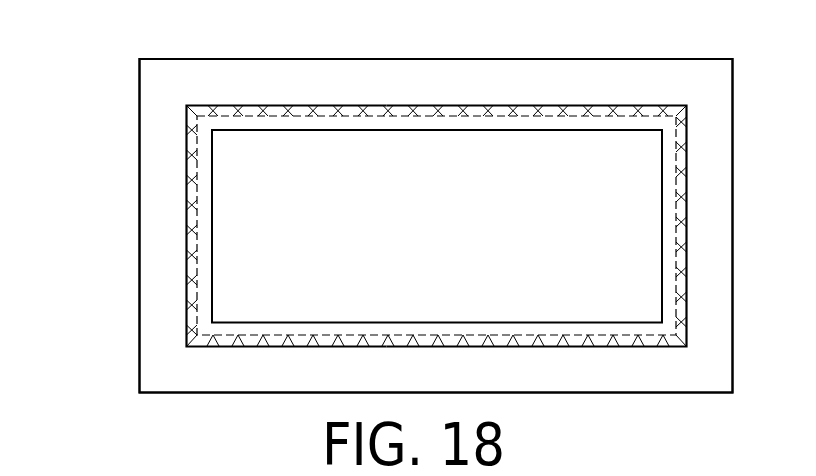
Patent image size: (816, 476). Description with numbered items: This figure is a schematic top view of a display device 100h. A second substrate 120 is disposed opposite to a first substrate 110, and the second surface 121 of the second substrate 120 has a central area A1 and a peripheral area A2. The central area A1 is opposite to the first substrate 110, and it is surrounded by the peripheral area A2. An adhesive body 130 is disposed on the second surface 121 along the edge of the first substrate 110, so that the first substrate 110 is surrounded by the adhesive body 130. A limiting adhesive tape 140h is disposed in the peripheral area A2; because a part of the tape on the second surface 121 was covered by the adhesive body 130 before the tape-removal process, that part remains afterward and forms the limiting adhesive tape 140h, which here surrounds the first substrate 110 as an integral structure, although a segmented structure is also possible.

The display device 100h is at (105, 22).
The first substrate 110 is at (443, 162).
The second substrate 120 is at (340, 59).
The second surface 121 is at (92, 137).
The central area A1 is at (237, 223).
The peripheral area A2 is at (155, 166).
The adhesive body 130 is at (203, 305).
The limiting adhesive tape 140h is at (184, 283).